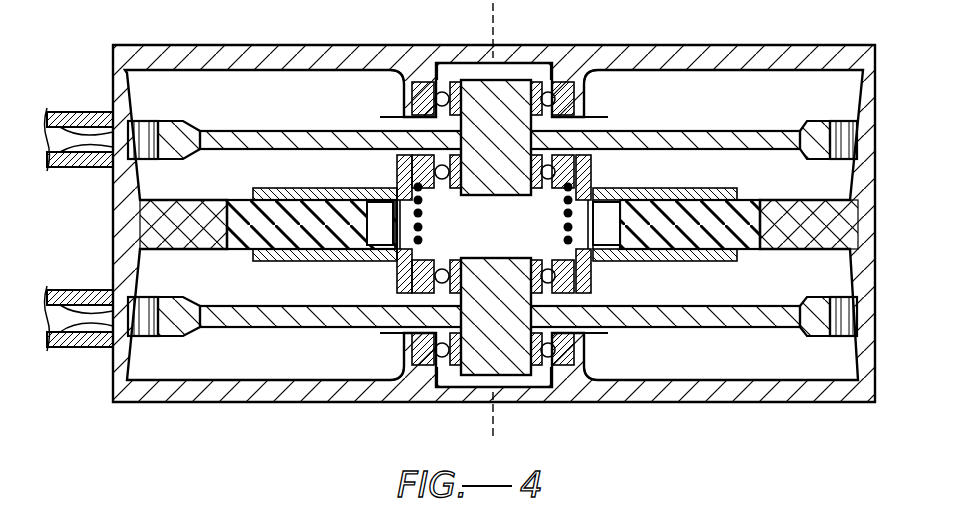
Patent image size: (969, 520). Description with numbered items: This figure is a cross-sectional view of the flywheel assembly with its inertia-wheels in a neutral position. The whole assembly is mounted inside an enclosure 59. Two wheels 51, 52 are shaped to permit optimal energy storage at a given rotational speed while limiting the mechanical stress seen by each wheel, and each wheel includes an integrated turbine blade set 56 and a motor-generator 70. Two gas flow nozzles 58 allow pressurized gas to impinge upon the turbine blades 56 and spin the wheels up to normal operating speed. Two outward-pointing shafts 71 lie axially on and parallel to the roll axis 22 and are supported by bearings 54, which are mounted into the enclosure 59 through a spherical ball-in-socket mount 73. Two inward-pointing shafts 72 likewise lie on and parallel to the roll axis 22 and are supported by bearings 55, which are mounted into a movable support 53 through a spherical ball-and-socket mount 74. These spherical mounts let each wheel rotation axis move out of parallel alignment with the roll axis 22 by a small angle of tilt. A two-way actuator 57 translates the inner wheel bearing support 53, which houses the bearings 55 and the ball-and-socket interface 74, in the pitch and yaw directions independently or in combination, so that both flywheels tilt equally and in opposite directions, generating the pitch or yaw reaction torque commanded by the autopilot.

The roll axis 22 is at (488, 20).
The wheel 51 is at (747, 130).
The wheel 52 is at (682, 328).
The movable support 53 is at (397, 262).
The bearings 54 is at (396, 98).
The bearings 55 is at (446, 204).
The turbine blade set 56 is at (140, 120).
The two-way actuator 57 is at (243, 255).
The gas flow nozzles 58 is at (100, 170).
The enclosure 59 is at (748, 46).
The motor-generator 70 is at (293, 132).
The outward-pointing shafts 71 is at (502, 62).
The inward-pointing shafts 72 is at (511, 216).
The spherical ball-in-socket mount 73 is at (436, 62).
The spherical ball-and-socket mount 74 is at (410, 160).